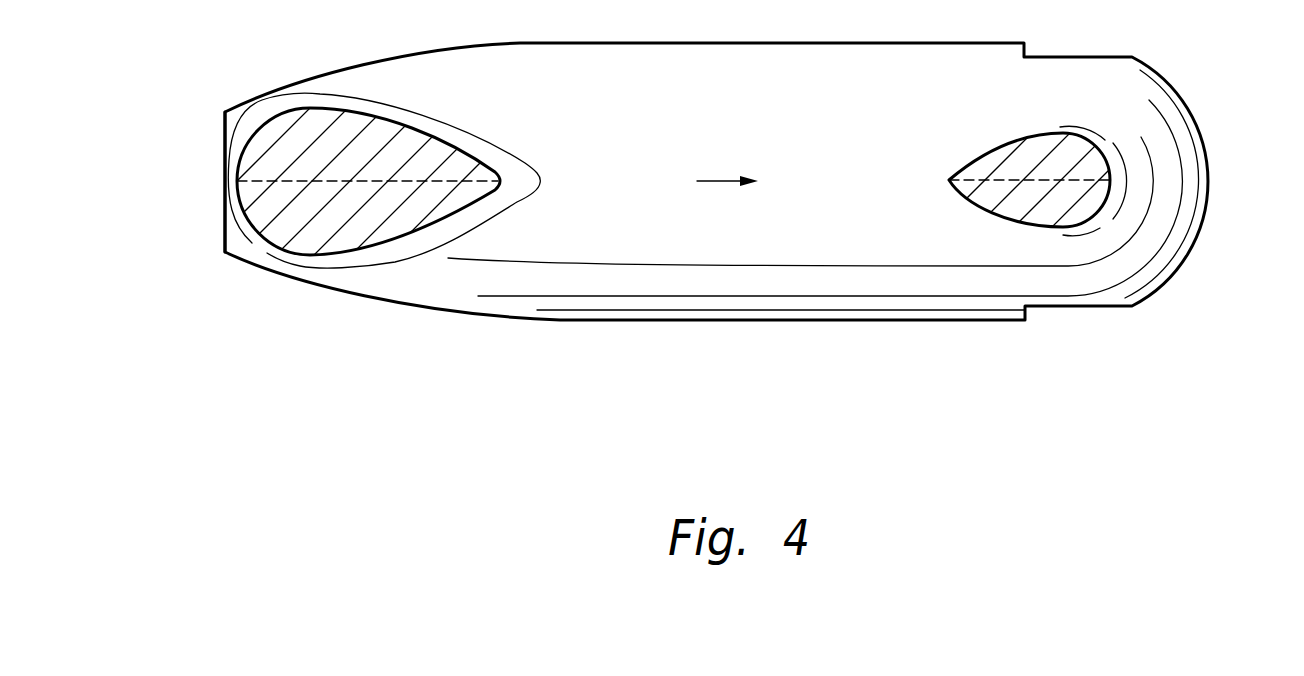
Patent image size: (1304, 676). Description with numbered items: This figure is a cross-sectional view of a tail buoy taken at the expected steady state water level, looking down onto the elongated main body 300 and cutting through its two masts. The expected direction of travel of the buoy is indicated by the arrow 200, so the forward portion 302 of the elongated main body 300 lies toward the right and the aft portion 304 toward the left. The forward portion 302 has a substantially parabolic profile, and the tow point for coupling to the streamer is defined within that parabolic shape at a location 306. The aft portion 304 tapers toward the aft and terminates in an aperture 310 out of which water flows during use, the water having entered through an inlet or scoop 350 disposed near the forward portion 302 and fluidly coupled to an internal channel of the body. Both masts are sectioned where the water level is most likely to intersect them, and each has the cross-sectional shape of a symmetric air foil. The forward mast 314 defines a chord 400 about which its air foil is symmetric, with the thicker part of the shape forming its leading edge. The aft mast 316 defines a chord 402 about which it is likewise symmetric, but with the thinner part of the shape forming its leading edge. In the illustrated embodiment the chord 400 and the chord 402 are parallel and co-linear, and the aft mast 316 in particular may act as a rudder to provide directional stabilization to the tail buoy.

The arrow 200 is at (720, 181).
The elongated main body 300 is at (333, 293).
The forward portion 302 is at (1187, 103).
The aft portion 304 is at (232, 108).
The tow point location 306 is at (1210, 178).
The aperture 310 is at (223, 142).
The forward mast 314 is at (1022, 138).
The aft mast 316 is at (432, 134).
The scoop 350 is at (1055, 308).
The chord 400 is at (1035, 183).
The chord 402 is at (410, 182).